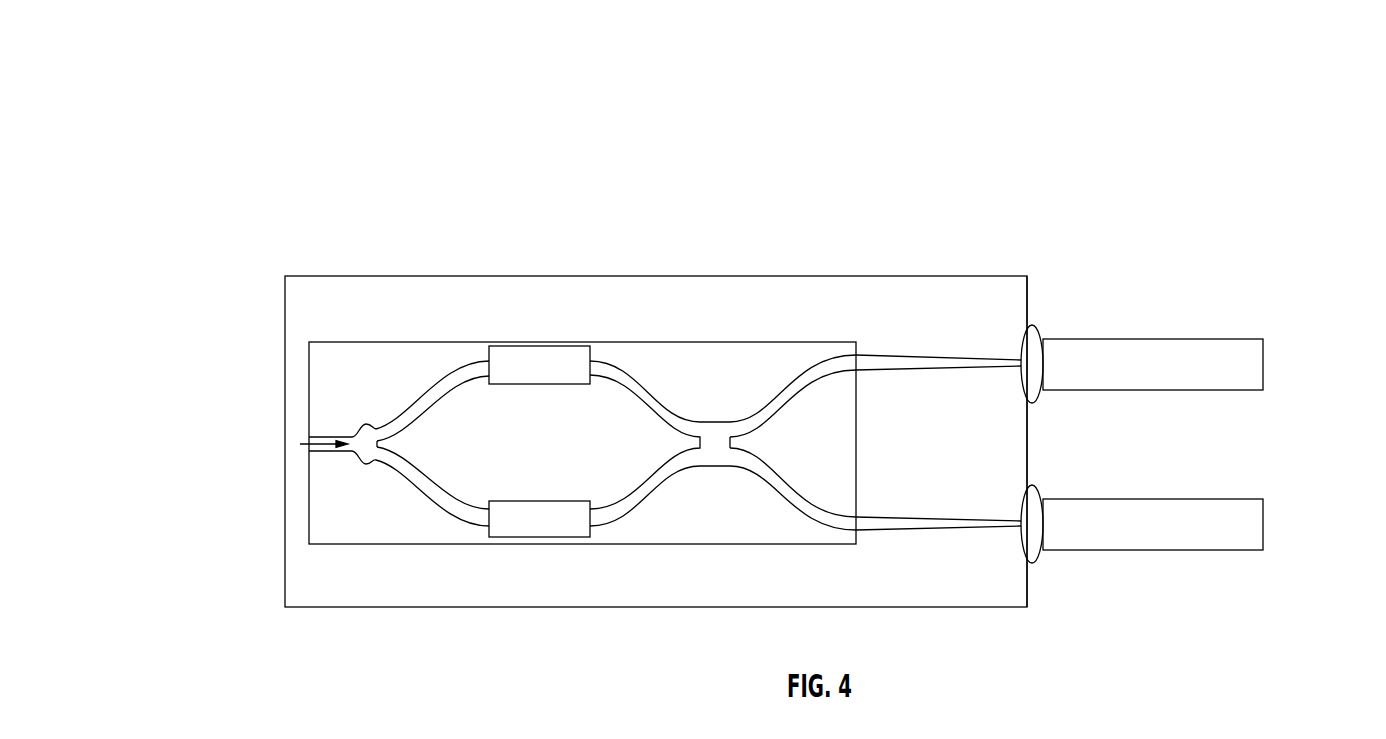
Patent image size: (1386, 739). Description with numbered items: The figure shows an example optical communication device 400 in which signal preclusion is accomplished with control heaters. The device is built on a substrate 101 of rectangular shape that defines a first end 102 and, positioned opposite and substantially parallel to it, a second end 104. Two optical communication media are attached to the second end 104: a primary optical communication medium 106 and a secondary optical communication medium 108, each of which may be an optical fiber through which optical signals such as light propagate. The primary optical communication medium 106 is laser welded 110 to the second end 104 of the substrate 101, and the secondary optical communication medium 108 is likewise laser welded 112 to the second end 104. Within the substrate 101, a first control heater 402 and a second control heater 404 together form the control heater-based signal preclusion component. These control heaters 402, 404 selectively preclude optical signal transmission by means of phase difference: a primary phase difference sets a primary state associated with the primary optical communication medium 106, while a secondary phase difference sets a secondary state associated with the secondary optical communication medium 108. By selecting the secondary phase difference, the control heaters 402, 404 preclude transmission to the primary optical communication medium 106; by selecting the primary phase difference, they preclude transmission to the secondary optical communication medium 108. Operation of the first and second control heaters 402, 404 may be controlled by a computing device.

The optical communication device 400 is at (165, 112).
The substrate 101 is at (375, 270).
The first end 102 is at (278, 321).
The second end 104 is at (1036, 297).
The primary optical communication medium 106 is at (1277, 330).
The secondary optical communication medium 108 is at (1272, 520).
The weld 110 is at (1046, 405).
The weld 112 is at (1050, 559).
The first control heater 402 is at (556, 355).
The second control heater 404 is at (546, 526).